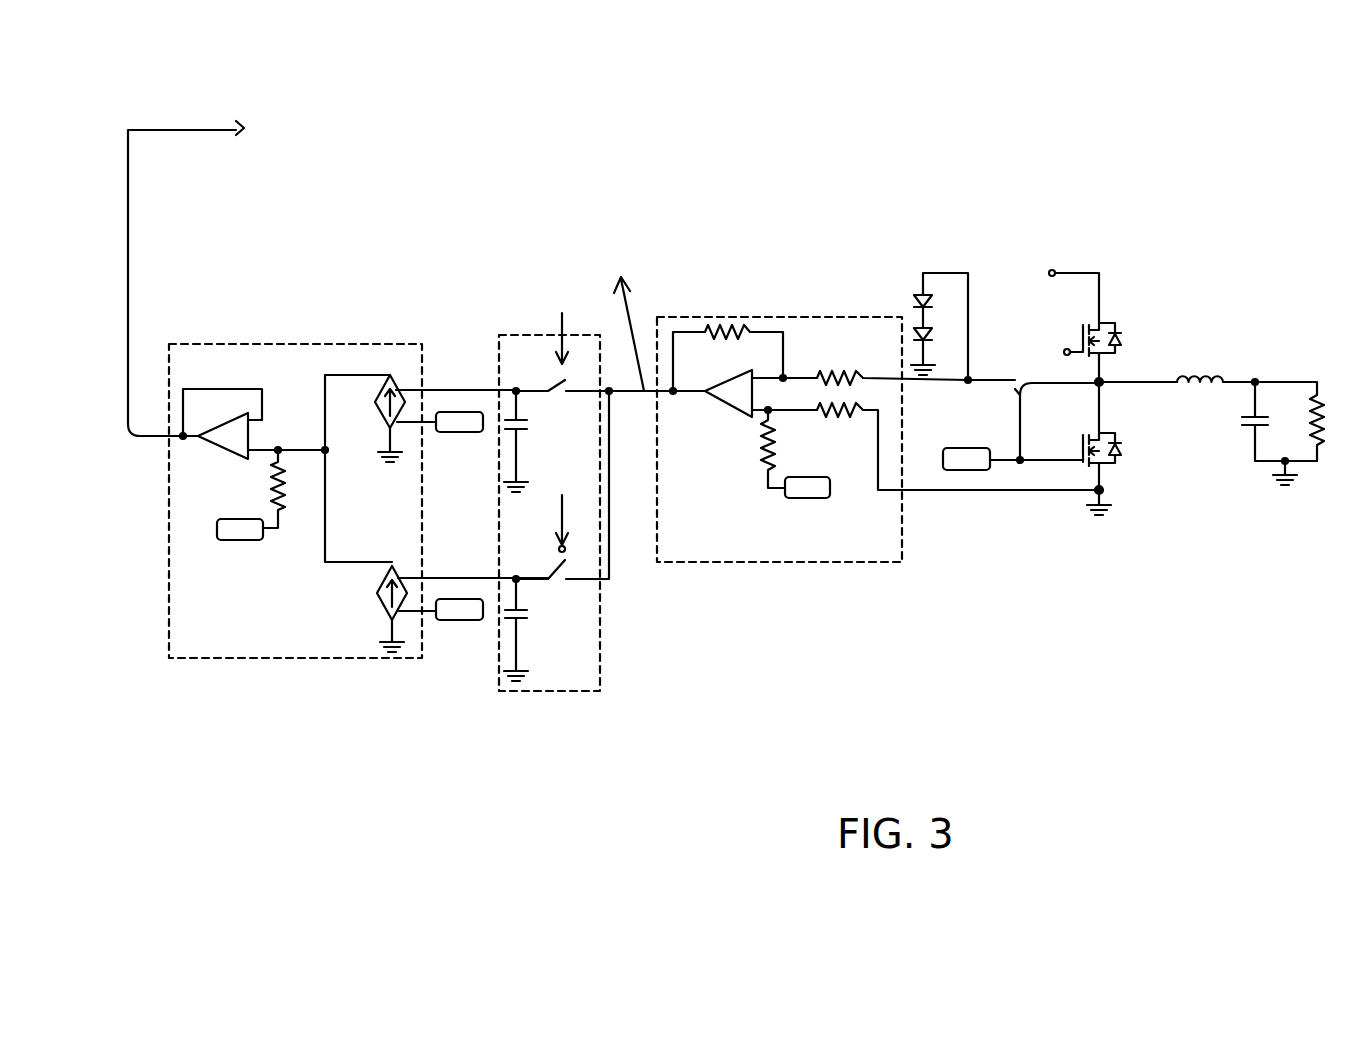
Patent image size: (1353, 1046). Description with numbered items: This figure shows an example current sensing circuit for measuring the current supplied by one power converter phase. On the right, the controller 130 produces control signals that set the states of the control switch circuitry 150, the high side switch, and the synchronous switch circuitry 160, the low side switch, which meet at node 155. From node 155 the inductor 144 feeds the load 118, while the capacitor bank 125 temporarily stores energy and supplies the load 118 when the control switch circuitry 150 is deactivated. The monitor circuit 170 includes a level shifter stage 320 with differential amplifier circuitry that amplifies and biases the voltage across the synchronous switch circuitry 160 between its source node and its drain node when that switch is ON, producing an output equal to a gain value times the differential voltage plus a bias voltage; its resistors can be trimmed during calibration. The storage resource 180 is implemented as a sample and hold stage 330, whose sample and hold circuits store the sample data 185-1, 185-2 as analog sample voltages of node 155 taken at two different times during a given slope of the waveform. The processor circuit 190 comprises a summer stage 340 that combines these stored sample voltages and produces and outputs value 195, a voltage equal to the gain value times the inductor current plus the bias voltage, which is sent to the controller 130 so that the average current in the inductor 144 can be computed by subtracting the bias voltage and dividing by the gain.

The value 195 is at (174, 123).
The controller 130 is at (346, 116).
The processor circuit 190 is at (422, 283).
The summer stage 340 is at (285, 673).
The sample data 185-1 is at (463, 381).
The sample data 185-2 is at (463, 570).
The storage resource 180 is at (645, 790).
The sample and hold stage 330 is at (602, 677).
The monitor circuit 170 is at (1008, 250).
The level shifter stage 320 is at (838, 570).
The control switch circuitry 150 is at (1067, 335).
The node 155 is at (1118, 380).
The synchronous switch circuitry 160 is at (1140, 467).
The inductor 144 is at (1197, 362).
The capacitor bank 125 is at (1236, 428).
The load 118 is at (1343, 471).